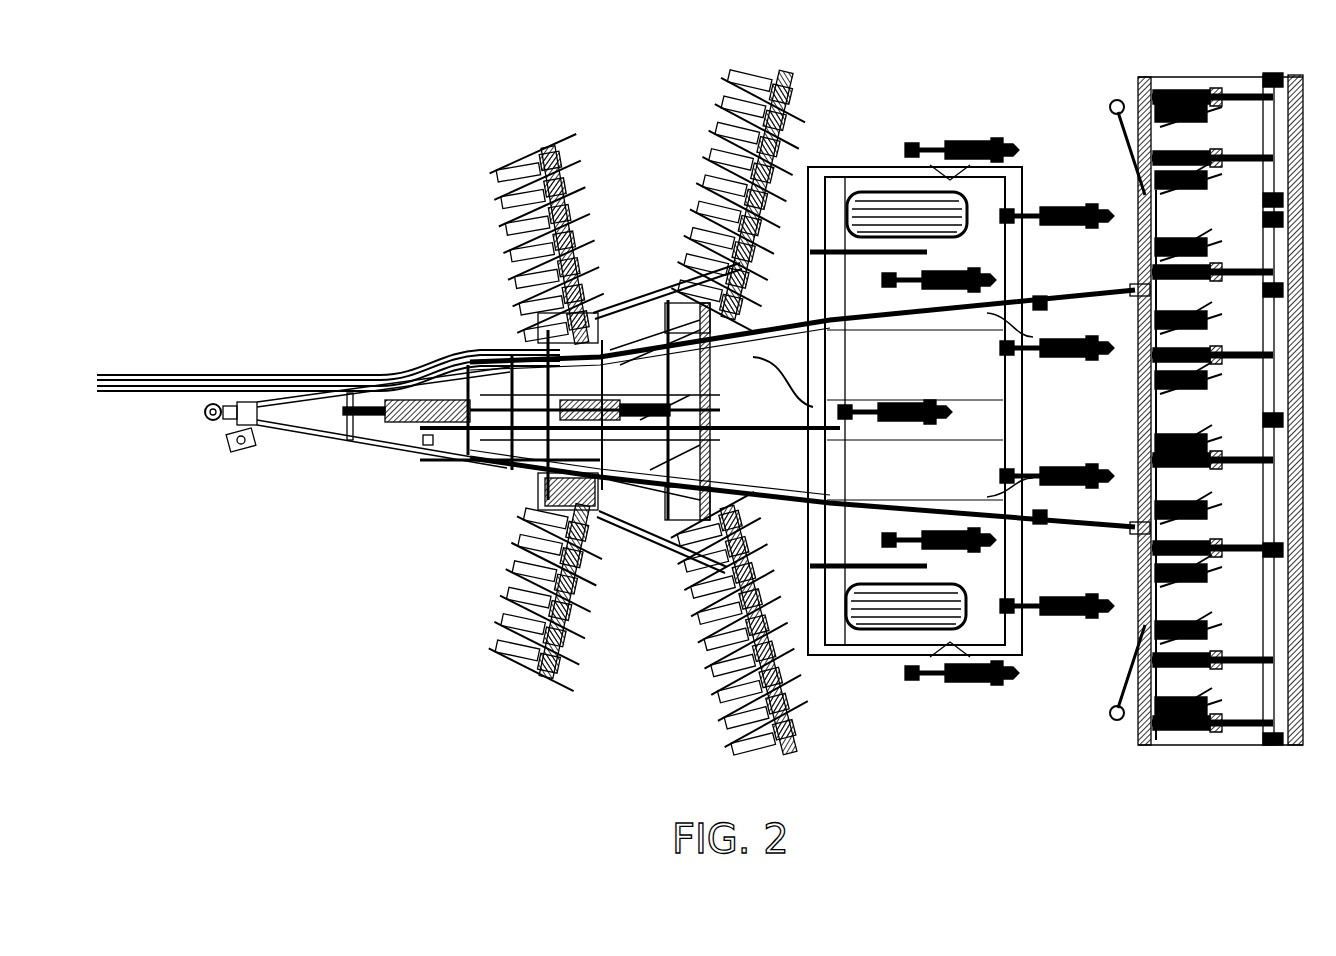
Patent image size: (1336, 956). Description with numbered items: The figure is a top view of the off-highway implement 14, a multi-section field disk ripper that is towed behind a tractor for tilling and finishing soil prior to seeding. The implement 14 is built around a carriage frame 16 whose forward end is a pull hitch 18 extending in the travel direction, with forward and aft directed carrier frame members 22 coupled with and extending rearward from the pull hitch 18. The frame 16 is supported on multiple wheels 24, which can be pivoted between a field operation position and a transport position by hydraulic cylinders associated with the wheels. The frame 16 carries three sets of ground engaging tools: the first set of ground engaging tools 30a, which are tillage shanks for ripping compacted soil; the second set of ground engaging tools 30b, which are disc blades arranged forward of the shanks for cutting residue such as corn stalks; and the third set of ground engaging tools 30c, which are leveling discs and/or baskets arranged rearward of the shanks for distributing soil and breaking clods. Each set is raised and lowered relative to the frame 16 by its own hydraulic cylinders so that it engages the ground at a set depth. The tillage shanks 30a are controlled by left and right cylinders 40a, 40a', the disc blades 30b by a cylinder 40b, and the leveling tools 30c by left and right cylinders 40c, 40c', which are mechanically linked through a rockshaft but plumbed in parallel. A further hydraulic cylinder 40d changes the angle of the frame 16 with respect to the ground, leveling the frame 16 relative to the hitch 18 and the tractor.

The off-highway implement 14 is at (338, 163).
The carriage frame 16 is at (458, 337).
The pull hitch 18 is at (250, 415).
The carrier frame members 22 is at (502, 352).
The wheels 24 is at (880, 200).
The first set of ground engaging tools 30a is at (967, 120).
The second set of ground engaging tools 30b is at (797, 49).
The third set of ground engaging tools 30c is at (1184, 56).
The hydraulic cylinder 40a is at (930, 514).
The hydraulic cylinder 40a' is at (928, 313).
The hydraulic cylinder 40b is at (547, 482).
The hydraulic cylinder 40c is at (1055, 536).
The hydraulic cylinder 40c' is at (1060, 294).
The hydraulic cylinder 40d is at (430, 405).